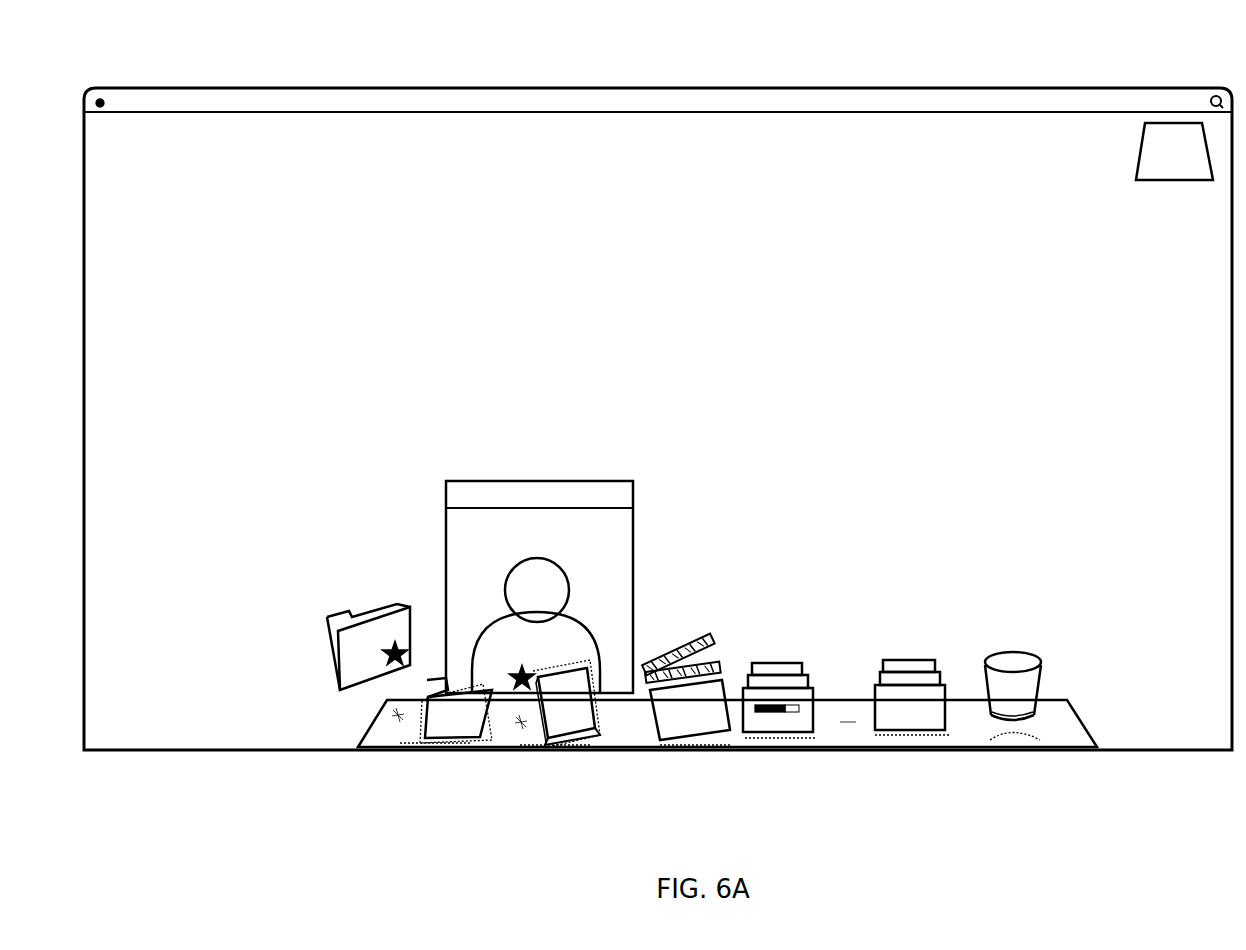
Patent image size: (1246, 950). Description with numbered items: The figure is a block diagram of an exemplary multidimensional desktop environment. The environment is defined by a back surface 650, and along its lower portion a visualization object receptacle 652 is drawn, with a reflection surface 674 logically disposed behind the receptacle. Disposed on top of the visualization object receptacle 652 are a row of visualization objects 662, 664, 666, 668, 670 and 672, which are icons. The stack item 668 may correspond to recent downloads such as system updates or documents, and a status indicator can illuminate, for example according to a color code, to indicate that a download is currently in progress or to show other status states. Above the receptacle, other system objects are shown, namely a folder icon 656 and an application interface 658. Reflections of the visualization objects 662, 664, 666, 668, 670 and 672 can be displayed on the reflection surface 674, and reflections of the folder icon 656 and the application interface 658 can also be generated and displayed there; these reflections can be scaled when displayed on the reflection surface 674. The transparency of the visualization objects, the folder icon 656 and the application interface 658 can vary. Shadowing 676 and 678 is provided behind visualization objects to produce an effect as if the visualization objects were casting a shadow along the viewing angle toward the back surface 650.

The back surface 650 is at (646, 88).
The visualization object receptacle 652 is at (1080, 717).
The folder icon 656 is at (327, 617).
The application interface 658 is at (535, 481).
The visualization object 662 is at (410, 748).
The visualization object 664 is at (550, 748).
The visualization object 666 is at (670, 745).
The stack item 668 is at (805, 738).
The visualization object 670 is at (957, 737).
The visualization object 672 is at (1025, 722).
The reflection surface 674 is at (845, 722).
The shadowing 676 is at (585, 668).
The shadowing 678 is at (483, 685).